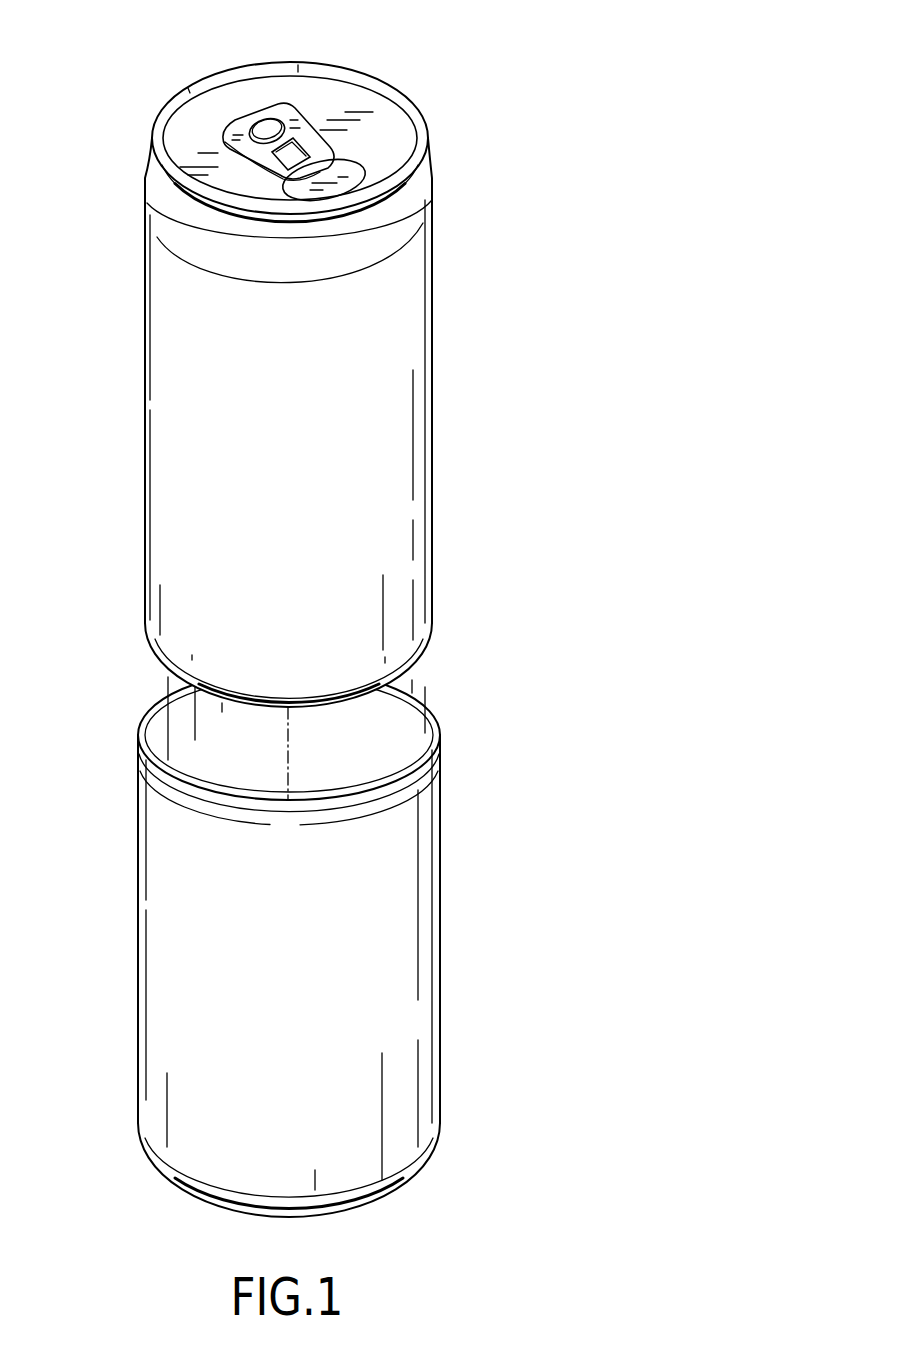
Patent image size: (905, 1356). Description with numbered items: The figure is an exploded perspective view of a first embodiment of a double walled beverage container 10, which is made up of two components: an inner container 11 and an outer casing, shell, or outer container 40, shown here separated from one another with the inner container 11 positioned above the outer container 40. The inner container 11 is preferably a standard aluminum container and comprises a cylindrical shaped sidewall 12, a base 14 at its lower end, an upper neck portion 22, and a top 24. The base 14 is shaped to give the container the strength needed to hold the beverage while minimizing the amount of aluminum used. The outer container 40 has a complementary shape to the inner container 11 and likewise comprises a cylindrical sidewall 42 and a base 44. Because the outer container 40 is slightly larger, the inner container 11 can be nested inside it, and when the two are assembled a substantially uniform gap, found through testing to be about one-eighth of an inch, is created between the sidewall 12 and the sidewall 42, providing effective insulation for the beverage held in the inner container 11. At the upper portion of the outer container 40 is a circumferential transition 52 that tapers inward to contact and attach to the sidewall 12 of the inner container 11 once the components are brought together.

The double walled beverage container 10 is at (431, 608).
The inner container 11 is at (311, 353).
The cylindrical shaped sidewall 12 is at (271, 398).
The base 14 is at (308, 694).
The upper neck portion 22 is at (155, 192).
The top 24 is at (257, 84).
The outer container 40 is at (327, 943).
The cylindrical sidewall 42 is at (270, 973).
The base 44 is at (243, 1210).
The circumferential transition 52 is at (146, 741).